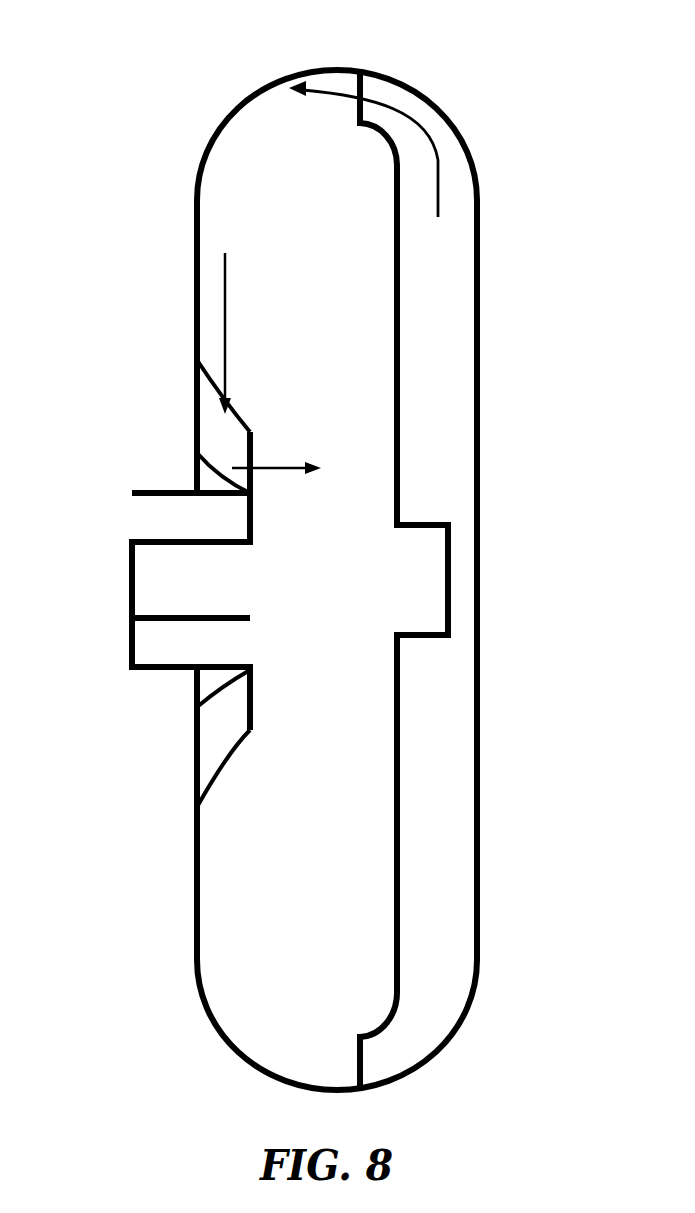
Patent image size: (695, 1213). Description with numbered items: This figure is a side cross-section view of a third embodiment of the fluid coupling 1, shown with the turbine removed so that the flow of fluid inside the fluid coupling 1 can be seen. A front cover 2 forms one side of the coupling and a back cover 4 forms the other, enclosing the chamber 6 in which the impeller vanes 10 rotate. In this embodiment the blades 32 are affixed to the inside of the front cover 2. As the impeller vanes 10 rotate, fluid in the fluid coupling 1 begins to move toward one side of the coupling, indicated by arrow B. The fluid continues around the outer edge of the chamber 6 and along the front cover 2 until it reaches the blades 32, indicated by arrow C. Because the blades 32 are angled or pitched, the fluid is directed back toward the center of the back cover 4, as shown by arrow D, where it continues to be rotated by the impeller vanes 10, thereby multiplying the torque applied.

The fluid coupling 1 is at (134, 84).
The front cover 2 is at (197, 239).
The back cover 4 is at (480, 762).
The chamber 6 is at (310, 666).
The impeller vanes 10 is at (449, 418).
The blades 32 is at (210, 436).